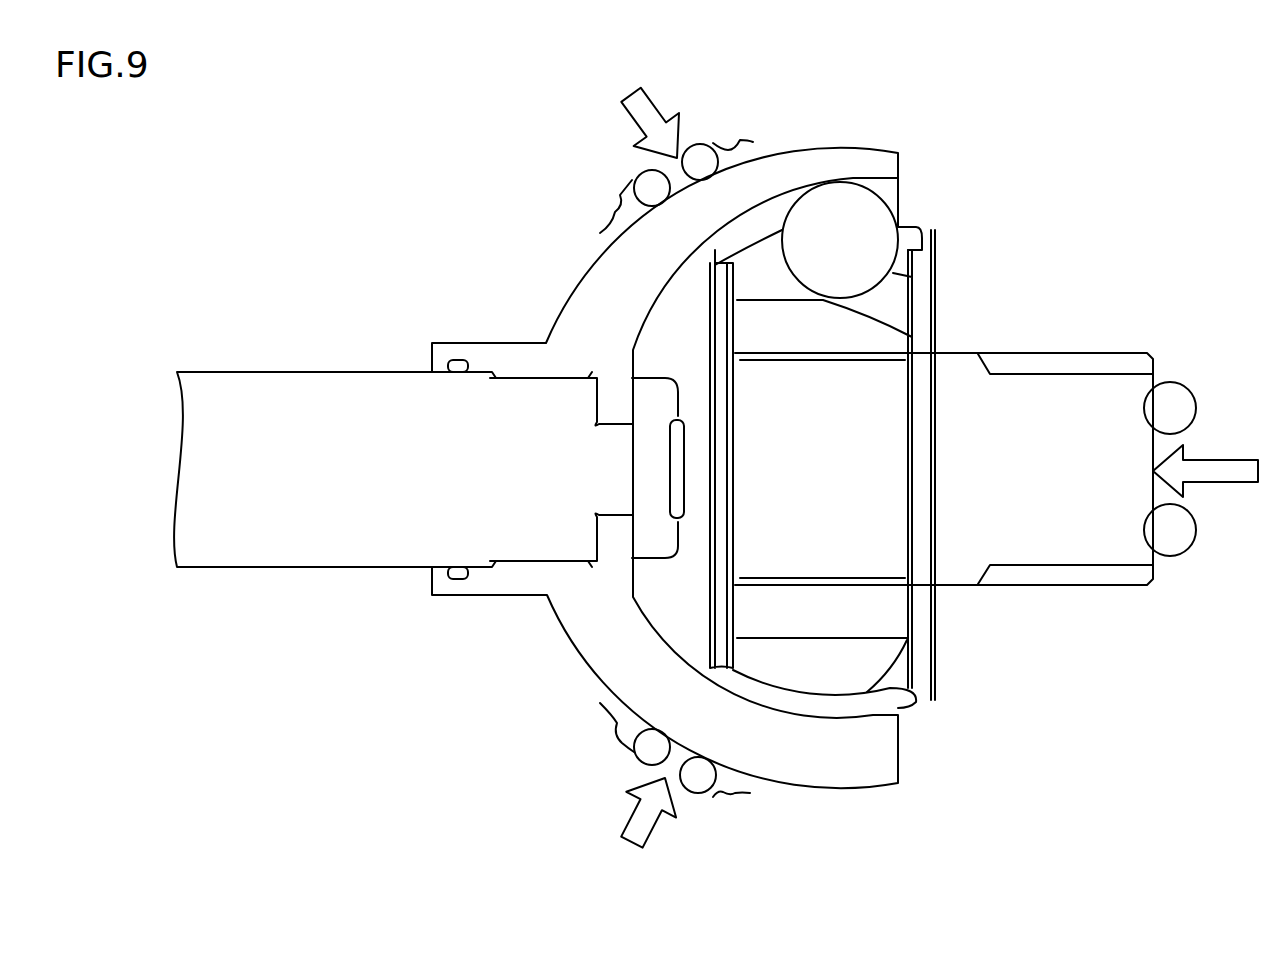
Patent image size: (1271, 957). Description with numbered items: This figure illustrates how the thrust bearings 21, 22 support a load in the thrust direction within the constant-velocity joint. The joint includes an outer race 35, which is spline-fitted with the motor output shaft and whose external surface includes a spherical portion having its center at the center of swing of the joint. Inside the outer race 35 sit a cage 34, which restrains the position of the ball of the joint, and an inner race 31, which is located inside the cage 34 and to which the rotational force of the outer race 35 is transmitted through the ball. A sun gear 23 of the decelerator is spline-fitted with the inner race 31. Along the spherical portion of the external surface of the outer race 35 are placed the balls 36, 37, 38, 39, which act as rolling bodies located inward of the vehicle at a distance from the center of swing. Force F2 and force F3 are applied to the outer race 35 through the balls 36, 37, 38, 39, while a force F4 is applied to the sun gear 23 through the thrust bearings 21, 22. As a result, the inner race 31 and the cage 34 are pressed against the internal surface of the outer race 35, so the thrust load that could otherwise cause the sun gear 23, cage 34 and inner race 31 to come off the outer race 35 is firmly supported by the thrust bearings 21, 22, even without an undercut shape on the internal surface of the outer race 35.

The thrust bearing 21 is at (1172, 390).
The thrust bearing 22 is at (1172, 548).
The sun gear 23 is at (1017, 585).
The inner race 31 is at (905, 640).
The cage 34 is at (900, 697).
The outer race 35 is at (588, 667).
The ball 36 is at (650, 182).
The ball 37 is at (700, 150).
The ball 38 is at (645, 757).
The ball 39 is at (697, 793).
The force F2 is at (633, 95).
The force F3 is at (630, 845).
The force F4 is at (1232, 488).